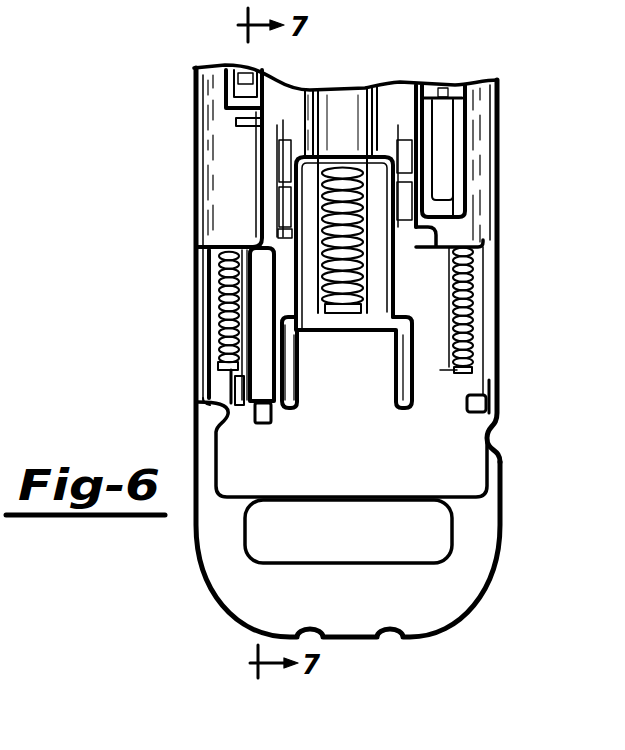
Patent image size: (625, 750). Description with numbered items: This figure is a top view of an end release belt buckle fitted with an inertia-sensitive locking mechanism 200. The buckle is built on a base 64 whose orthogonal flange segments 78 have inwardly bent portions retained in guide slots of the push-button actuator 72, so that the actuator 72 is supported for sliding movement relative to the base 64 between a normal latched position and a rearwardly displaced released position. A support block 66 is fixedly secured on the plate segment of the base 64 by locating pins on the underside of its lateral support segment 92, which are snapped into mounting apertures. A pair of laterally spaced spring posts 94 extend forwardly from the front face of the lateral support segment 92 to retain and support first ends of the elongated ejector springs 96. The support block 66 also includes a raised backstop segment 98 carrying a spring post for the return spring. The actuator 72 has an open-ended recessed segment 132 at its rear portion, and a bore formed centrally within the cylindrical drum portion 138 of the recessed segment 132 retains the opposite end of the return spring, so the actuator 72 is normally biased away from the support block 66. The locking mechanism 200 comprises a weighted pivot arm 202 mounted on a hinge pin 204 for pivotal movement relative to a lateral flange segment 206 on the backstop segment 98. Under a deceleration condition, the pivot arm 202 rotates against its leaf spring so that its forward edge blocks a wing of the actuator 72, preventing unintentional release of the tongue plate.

The base 64 is at (516, 525).
The support block 66 is at (472, 468).
The push-button actuator 72 is at (477, 107).
The orthogonal flange segments 78 is at (215, 165).
The lateral support segment 92 is at (503, 442).
The spring posts 94 is at (473, 293).
The ejector springs 96 is at (473, 308).
The backstop segment 98 is at (400, 366).
The recessed segment 132 is at (392, 150).
The cylindrical drum portion 138 is at (331, 100).
The inertia-sensitive locking mechanism 200 is at (290, 450).
The weighted pivot arm 202 is at (260, 318).
The hinge pin 204 is at (202, 410).
The lateral flange segment 206 is at (299, 377).